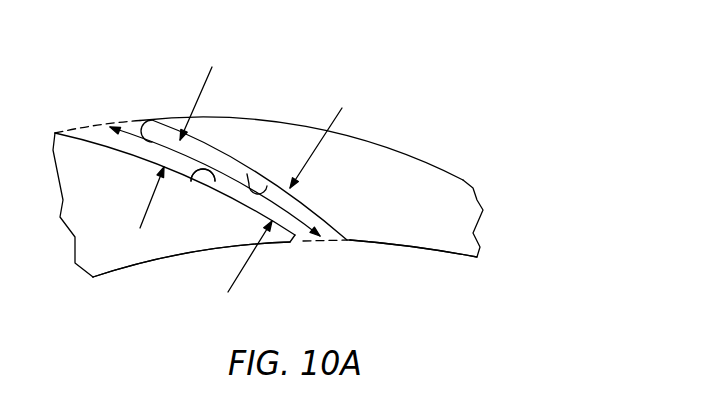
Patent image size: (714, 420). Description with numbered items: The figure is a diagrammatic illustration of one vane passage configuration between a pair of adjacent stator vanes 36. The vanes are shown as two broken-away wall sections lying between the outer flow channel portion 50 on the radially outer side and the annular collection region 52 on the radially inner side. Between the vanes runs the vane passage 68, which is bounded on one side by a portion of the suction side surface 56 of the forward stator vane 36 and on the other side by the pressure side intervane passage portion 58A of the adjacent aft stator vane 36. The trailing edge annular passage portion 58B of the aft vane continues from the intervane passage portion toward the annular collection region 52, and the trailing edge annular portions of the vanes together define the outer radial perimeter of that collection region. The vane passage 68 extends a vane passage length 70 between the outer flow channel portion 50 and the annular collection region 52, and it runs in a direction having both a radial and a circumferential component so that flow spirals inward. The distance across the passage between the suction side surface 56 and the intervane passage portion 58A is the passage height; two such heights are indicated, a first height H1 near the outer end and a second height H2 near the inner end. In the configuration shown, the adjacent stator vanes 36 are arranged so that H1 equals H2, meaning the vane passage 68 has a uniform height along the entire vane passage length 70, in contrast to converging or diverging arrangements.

The stator vane 36 is at (109, 213).
The outer flow channel portion 50 is at (127, 99).
The annular collection region 52 is at (429, 294).
The suction side surface 56 is at (190, 182).
The pressure side intervane passage portion 58A is at (269, 174).
The trailing edge annular passage portion 58B is at (476, 258).
The vane passage 68 is at (300, 240).
The vane passage length 70 is at (222, 164).
The first vane passage height H1 is at (204, 83).
The second vane passage height H2 is at (335, 122).